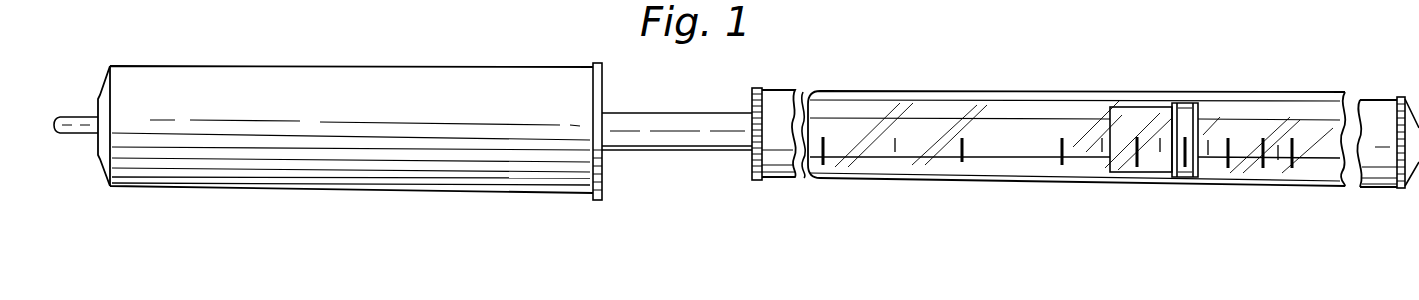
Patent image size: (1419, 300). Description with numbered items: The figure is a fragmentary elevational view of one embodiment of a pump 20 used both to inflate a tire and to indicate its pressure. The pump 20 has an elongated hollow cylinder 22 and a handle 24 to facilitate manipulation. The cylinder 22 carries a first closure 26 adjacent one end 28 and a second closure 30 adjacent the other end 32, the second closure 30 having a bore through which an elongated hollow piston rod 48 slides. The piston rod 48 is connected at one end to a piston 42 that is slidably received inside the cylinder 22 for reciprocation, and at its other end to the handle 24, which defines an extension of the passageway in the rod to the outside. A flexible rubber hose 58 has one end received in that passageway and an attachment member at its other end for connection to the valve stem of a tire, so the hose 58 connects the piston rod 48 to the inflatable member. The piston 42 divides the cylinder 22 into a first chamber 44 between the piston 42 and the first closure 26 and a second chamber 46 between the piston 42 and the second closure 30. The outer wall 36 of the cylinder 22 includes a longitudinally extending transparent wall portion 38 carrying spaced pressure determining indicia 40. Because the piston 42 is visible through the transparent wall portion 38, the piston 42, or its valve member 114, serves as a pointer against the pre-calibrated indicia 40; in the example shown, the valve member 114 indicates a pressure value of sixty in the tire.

The hose 58 is at (75, 117).
The handle 24 is at (372, 66).
The piston rod 48 is at (670, 150).
The second closure 30 is at (750, 98).
The other end of the cylinder 32 is at (777, 182).
The outer wall 36 is at (888, 91).
The second chamber 46 is at (940, 104).
The transparent wall portion 38 is at (938, 165).
The pressure determining indicia 40 is at (970, 160).
The piston 42 is at (1147, 157).
The cylinder 22 is at (1122, 97).
The valve member 114 is at (1200, 101).
The pump 20 is at (1046, 92).
The first chamber 44 is at (1248, 113).
The one end of the cylinder 28 is at (1380, 99).
The first closure 26 is at (1417, 183).